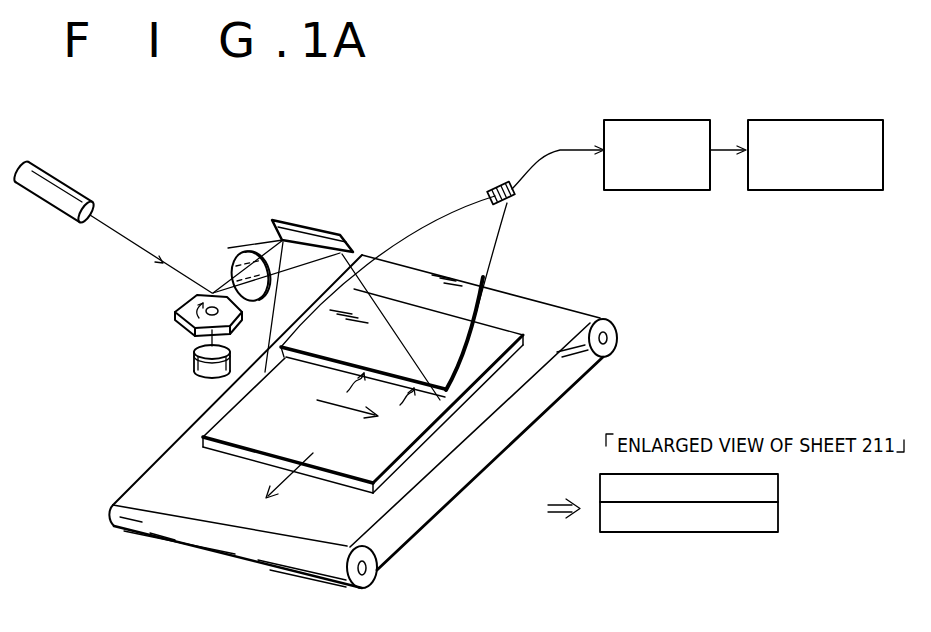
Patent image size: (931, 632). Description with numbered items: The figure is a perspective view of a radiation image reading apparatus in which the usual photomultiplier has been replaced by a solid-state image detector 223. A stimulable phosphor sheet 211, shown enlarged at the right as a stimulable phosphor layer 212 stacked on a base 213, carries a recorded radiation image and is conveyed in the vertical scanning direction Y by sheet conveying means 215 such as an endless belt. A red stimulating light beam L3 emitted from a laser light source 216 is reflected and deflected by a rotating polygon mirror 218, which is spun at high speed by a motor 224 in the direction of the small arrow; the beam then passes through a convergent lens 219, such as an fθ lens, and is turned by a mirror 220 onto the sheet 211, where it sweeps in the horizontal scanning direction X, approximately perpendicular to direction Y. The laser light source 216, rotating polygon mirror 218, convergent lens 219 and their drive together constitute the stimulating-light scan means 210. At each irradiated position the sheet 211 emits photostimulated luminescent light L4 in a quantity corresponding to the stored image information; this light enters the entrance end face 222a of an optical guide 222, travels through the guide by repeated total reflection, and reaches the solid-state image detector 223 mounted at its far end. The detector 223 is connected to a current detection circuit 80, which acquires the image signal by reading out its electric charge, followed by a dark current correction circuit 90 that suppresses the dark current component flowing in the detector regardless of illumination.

The stimulating-light scan means 210 is at (108, 392).
The stimulable phosphor sheet 211 is at (392, 443).
The stimulable phosphor layer 212 is at (772, 491).
The base 213 is at (772, 524).
The sheet conveying means 215 is at (372, 515).
The laser light source 216 is at (80, 190).
The rotating polygon mirror 218 is at (177, 321).
The convergent lens 219 is at (234, 256).
The mirror 220 is at (323, 232).
The optical guide 222 is at (437, 325).
The entrance end face 222a is at (407, 390).
The solid-state image detector 223 is at (488, 192).
The motor 224 is at (194, 367).
The current detection circuit 80 is at (690, 118).
The dark current correction circuit 90 is at (834, 118).
The stimulating light L3 is at (120, 236).
The photostimulated luminescent light L4 is at (306, 360).
The horizontal scanning direction X is at (336, 416).
The vertical scanning direction Y is at (285, 477).